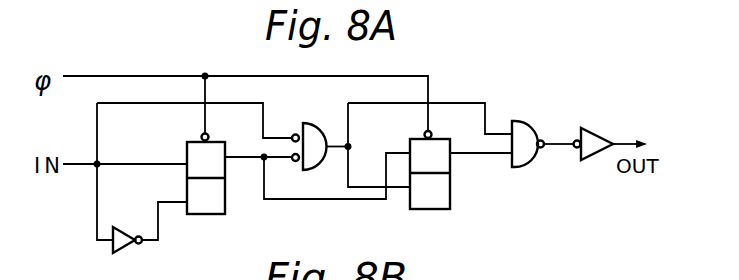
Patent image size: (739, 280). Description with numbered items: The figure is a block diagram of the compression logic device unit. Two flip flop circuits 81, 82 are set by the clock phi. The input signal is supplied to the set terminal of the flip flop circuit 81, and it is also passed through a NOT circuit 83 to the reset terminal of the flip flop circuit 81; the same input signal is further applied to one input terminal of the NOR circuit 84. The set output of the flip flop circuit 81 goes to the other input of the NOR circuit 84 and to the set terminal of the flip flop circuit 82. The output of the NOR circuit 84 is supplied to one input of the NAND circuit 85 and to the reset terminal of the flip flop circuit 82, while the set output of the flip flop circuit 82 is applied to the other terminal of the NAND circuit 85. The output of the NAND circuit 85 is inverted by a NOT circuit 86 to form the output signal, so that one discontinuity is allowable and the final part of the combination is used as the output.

The flip flop circuit 81 is at (203, 214).
The flip flop circuit 82 is at (428, 209).
The NOT circuit 83 is at (125, 249).
The NOR circuit 84 is at (309, 123).
The NAND circuit 85 is at (520, 167).
The NOT circuit 86 is at (595, 159).